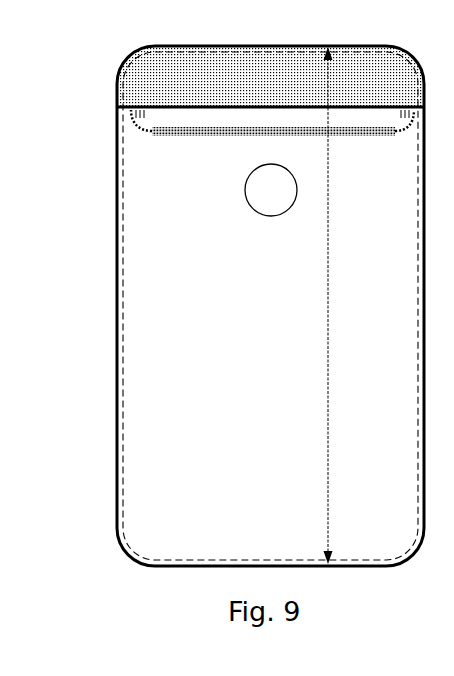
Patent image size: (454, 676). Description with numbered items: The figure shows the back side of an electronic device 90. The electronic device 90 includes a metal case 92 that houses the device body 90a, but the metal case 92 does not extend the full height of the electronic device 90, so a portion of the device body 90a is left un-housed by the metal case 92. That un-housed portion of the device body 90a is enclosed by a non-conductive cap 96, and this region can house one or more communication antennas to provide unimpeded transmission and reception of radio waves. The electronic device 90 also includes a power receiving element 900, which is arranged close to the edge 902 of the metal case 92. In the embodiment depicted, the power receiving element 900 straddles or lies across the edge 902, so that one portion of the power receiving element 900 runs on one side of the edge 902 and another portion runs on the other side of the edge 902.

The electronic device 90 is at (240, 323).
The device body 90a is at (123, 338).
The metal case 92 is at (117, 296).
The non-conductive cap 96 is at (118, 93).
The power receiving element 900 is at (175, 138).
The edge 902 is at (213, 101).